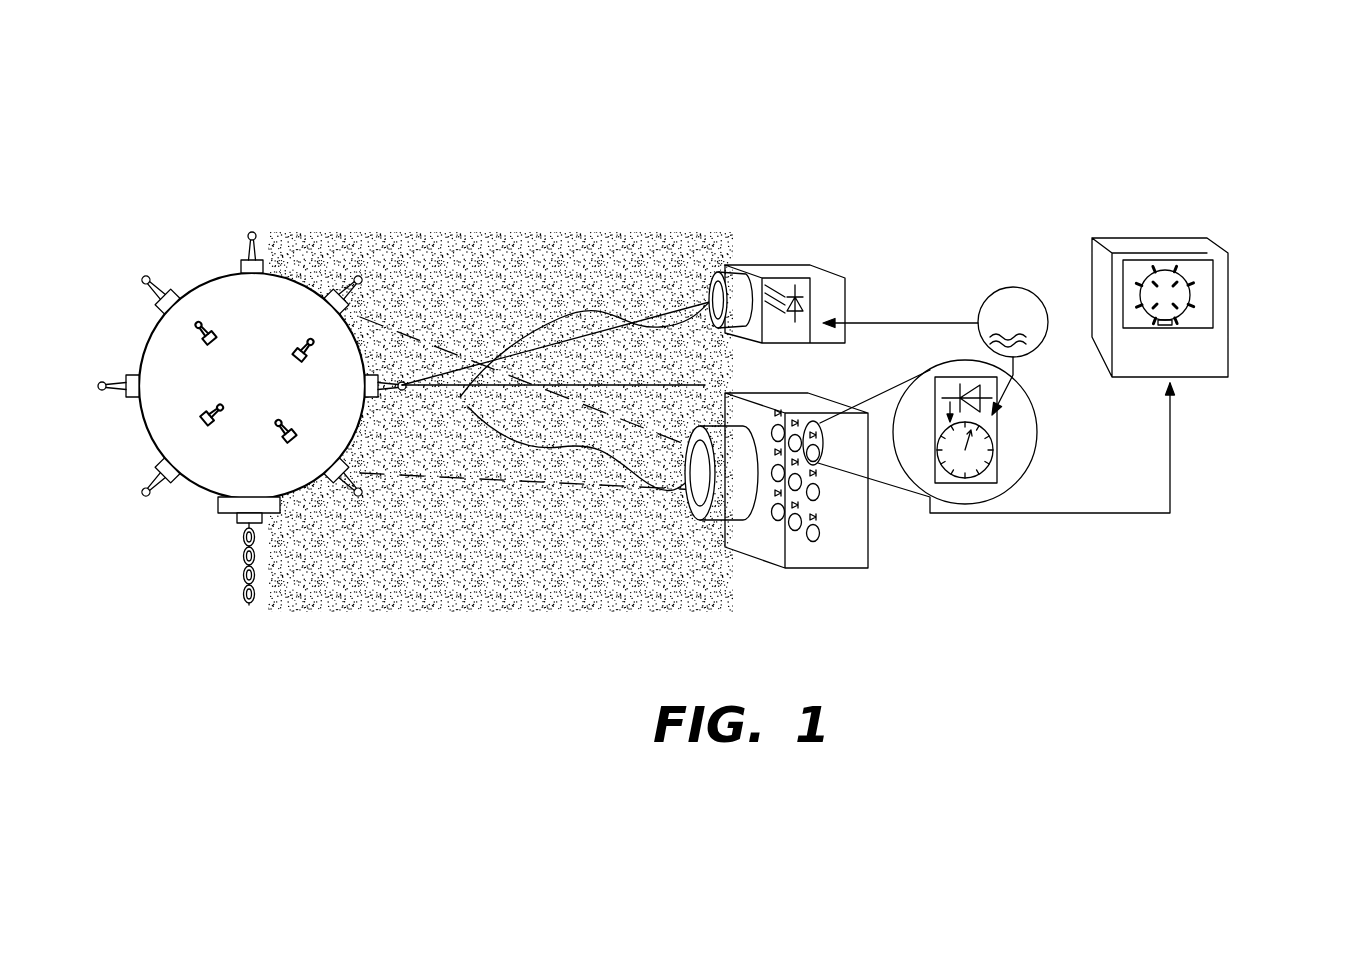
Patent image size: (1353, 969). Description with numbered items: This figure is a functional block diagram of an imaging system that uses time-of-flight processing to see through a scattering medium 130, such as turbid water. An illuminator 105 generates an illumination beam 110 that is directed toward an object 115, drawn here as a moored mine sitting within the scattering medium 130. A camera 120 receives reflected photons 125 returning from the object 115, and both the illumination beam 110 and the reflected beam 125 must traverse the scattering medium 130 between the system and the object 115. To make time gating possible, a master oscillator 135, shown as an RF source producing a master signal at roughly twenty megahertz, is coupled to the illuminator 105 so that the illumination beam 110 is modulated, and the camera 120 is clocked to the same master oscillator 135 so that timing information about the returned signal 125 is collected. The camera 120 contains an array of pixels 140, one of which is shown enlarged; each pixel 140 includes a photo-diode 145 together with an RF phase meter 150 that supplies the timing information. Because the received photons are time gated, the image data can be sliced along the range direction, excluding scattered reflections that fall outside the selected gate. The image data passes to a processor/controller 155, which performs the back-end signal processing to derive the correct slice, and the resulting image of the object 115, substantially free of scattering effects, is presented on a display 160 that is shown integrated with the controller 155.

The illuminator 105 is at (825, 272).
The illumination beam 110 is at (650, 317).
The object 115 is at (152, 325).
The camera 120 is at (832, 570).
The reflected photons 125 is at (508, 470).
The scattering medium 130 is at (395, 233).
The master oscillator 135 is at (988, 298).
The pixel 140 is at (989, 441).
The photo-diode 145 is at (972, 388).
The RF phase meter 150 is at (987, 470).
The processor/controller 155 is at (1214, 289).
The display 160 is at (1200, 310).